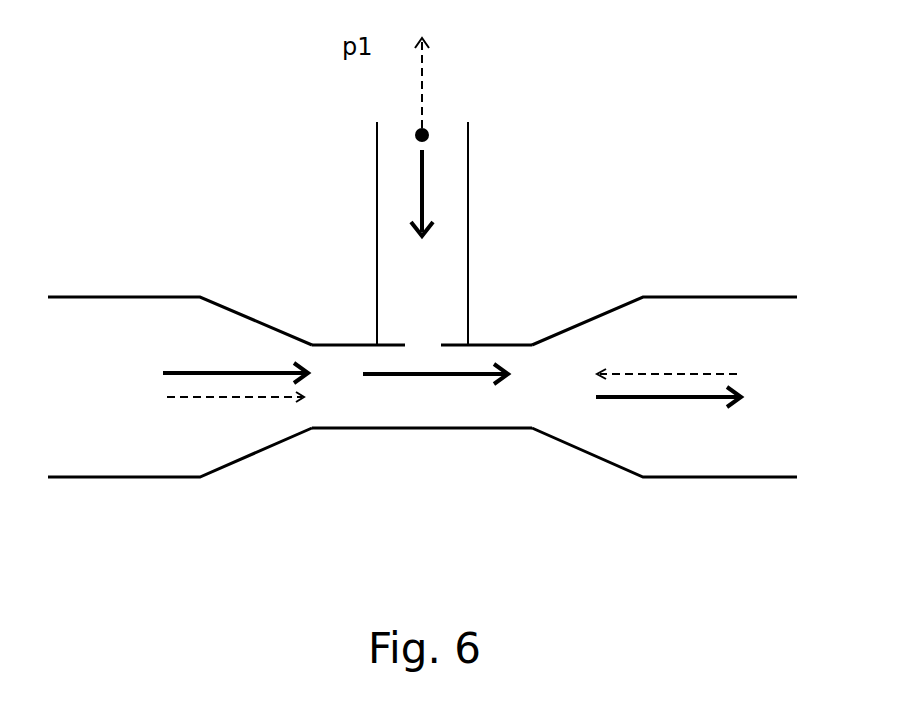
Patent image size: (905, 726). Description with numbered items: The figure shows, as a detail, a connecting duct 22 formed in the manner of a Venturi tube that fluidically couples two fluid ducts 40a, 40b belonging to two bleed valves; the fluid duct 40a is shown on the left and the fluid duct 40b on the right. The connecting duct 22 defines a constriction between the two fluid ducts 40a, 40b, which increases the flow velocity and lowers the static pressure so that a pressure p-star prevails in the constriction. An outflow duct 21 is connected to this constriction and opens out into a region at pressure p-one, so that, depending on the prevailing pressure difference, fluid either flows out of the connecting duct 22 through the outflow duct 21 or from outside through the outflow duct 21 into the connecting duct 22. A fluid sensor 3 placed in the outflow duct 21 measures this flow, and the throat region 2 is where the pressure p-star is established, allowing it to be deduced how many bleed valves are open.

The throat / constriction of the flow channel 2 is at (349, 346).
The particle / measuring point 3 is at (435, 131).
The outflow duct 21 is at (468, 195).
The connecting duct 22 is at (423, 428).
The fluid duct 40a is at (120, 477).
The fluid duct 40b is at (722, 477).